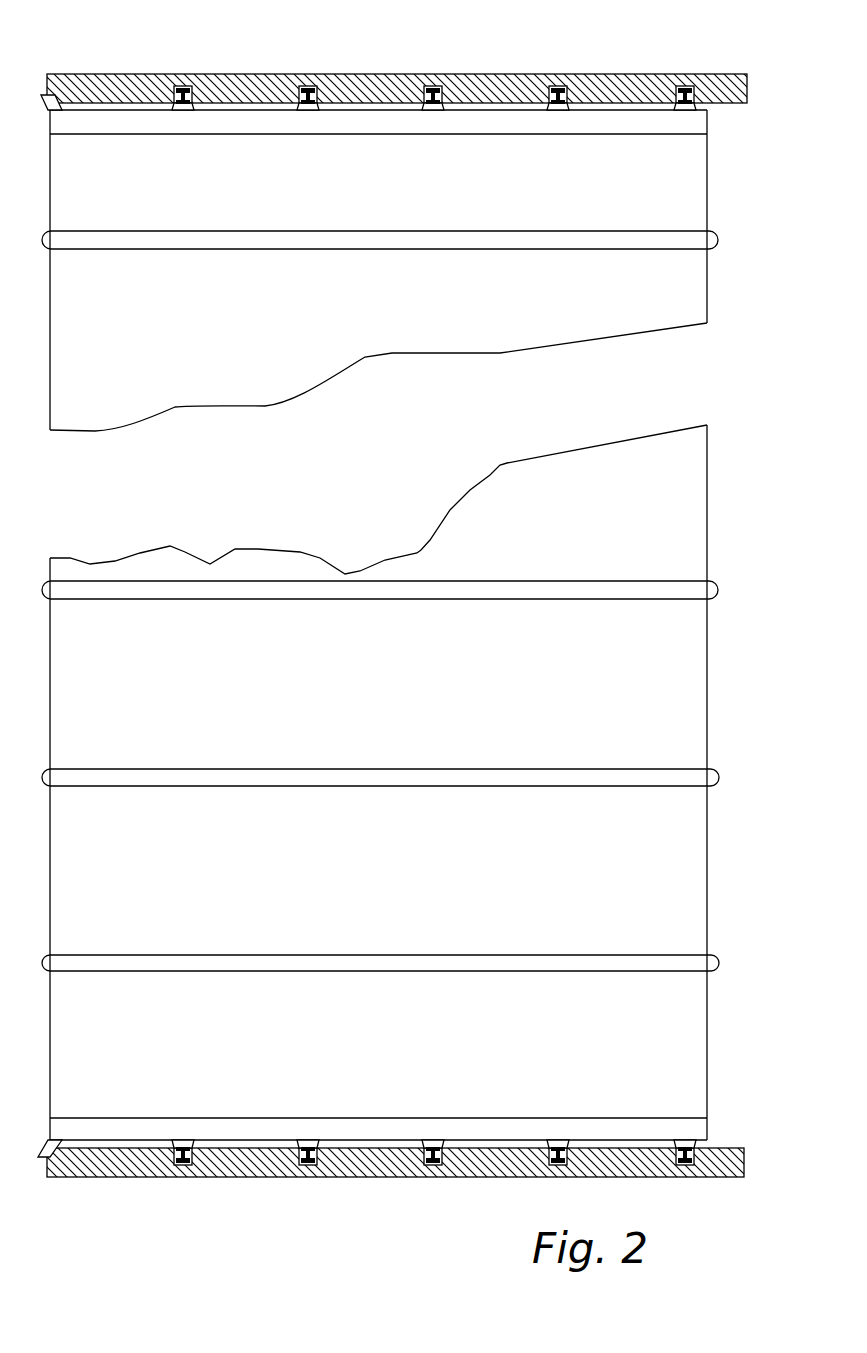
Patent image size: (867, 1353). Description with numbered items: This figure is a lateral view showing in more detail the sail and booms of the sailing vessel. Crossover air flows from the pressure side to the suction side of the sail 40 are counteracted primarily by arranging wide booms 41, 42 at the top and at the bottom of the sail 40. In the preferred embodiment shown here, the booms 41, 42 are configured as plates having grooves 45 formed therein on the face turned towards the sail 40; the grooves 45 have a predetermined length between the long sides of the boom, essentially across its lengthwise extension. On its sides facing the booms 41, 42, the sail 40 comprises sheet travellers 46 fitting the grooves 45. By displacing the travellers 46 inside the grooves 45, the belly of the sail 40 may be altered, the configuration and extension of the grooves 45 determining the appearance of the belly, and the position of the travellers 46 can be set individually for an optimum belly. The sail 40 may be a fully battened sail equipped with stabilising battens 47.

The sail 40 is at (640, 510).
The boom 41 is at (722, 1158).
The boom 42 is at (603, 74).
The grooves 45 is at (184, 86).
The sheet travellers 46 is at (183, 107).
The stabilising battens 47 is at (655, 770).